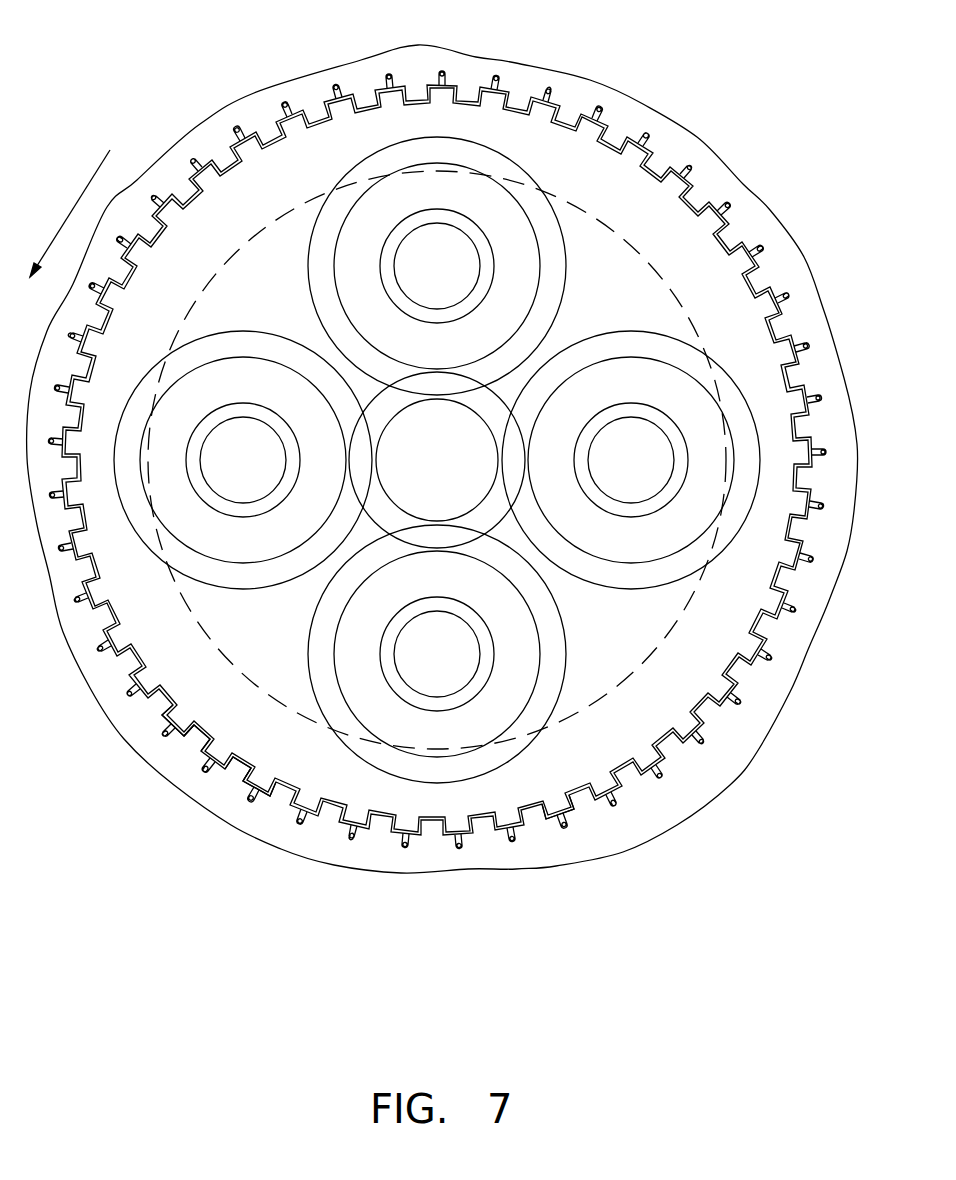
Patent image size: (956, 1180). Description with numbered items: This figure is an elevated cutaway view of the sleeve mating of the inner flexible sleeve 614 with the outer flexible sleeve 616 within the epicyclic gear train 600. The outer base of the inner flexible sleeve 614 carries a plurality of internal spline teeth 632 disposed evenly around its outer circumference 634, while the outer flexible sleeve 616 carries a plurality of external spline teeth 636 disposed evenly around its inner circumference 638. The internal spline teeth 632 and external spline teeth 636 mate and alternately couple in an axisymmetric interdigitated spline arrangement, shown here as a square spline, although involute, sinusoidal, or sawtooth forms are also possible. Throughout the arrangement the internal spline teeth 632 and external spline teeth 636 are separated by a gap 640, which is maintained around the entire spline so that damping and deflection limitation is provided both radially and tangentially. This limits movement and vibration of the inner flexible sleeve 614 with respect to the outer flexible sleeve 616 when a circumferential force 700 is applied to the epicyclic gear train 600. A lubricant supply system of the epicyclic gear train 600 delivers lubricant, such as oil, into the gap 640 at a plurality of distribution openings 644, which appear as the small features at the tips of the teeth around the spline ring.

The epicyclic gear train 600 is at (190, 85).
The circumferential force 700 is at (68, 200).
The inner flexible sleeve 614 is at (603, 174).
The outer flexible sleeve 616 is at (760, 194).
The internal spline teeth 632 is at (260, 777).
The outer circumference 634 is at (177, 720).
The external spline teeth 636 is at (195, 738).
The inner circumference 638 is at (240, 770).
The gap 640 is at (543, 808).
The distribution openings 644 is at (565, 830).